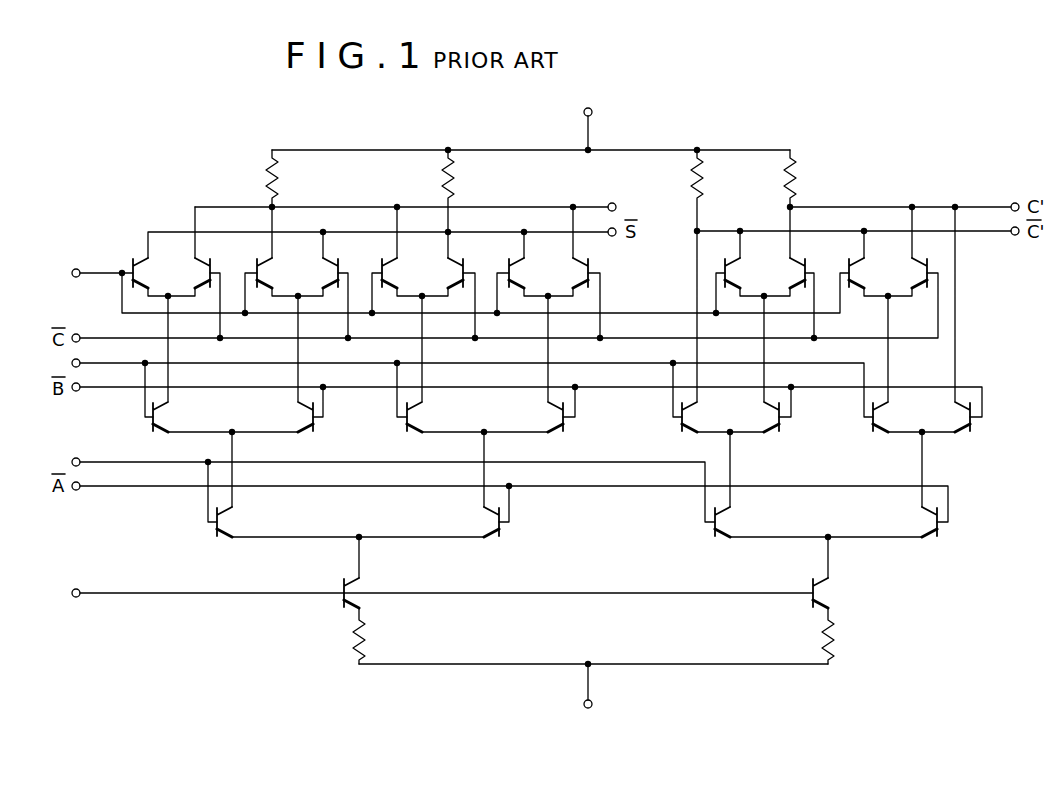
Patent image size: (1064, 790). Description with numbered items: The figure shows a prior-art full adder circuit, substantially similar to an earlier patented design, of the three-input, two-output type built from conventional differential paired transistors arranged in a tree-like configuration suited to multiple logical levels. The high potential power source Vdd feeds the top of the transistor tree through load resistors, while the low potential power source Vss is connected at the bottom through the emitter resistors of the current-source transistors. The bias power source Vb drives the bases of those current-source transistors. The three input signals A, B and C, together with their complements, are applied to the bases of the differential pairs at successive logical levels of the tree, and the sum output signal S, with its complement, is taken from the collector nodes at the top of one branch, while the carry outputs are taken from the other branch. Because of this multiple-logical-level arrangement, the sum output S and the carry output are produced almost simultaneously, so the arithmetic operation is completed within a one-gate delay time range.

The high potential power source Vdd is at (531, 114).
The low potential power source Vss is at (593, 701).
The bias power source Vb is at (438, 621).
The input signal C is at (450, 289).
The input signal B is at (462, 385).
The input signal A is at (383, 486).
The sum output signal S is at (415, 206).